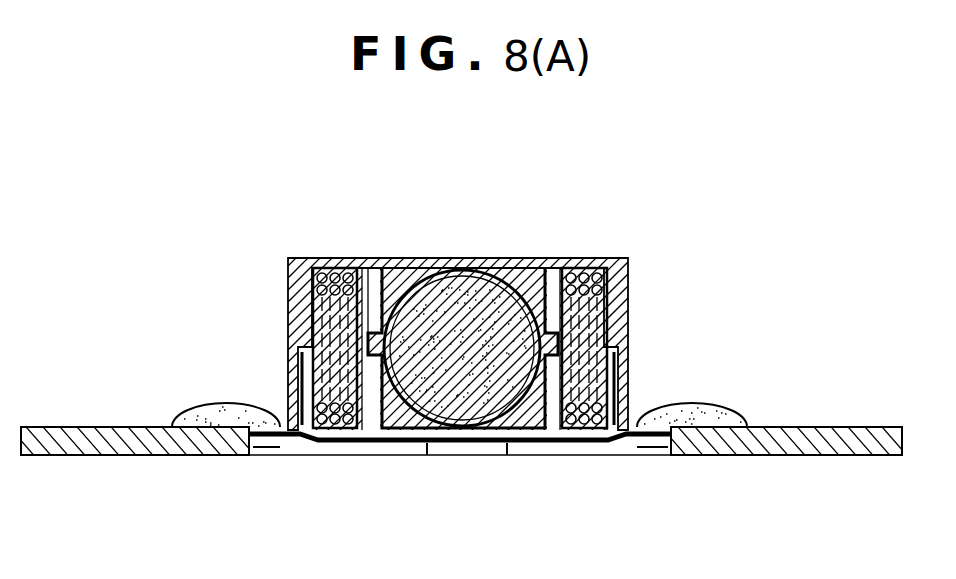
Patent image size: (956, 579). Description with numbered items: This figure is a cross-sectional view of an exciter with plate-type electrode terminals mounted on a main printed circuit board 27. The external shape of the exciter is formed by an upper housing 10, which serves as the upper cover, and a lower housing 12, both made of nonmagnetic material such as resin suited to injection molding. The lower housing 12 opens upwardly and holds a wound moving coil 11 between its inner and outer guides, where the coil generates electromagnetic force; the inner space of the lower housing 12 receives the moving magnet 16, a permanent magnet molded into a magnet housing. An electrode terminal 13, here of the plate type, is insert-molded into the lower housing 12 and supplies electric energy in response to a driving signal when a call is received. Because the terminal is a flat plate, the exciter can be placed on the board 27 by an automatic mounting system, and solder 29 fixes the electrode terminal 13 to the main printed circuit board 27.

The upper housing 10 is at (633, 276).
The moving coil 11 is at (590, 272).
The lower housing 12 is at (552, 387).
The electrode terminal 13 is at (610, 447).
The moving magnet 16 is at (415, 318).
The main printed circuit board 27 is at (777, 445).
The solder 29 is at (716, 405).